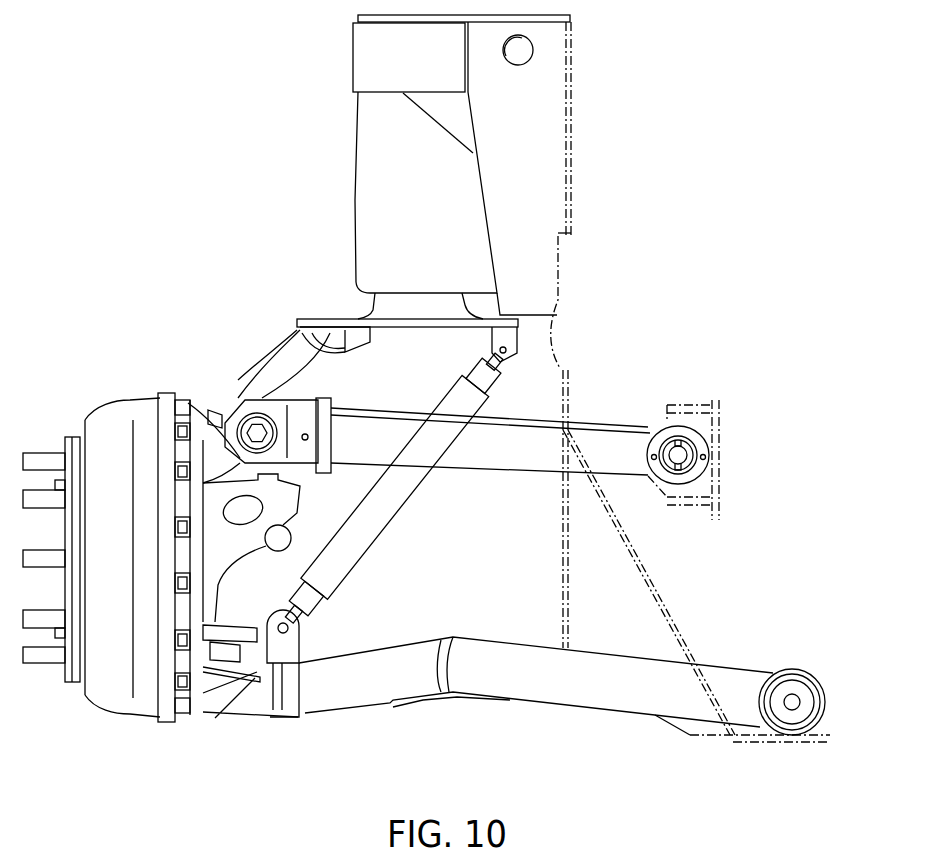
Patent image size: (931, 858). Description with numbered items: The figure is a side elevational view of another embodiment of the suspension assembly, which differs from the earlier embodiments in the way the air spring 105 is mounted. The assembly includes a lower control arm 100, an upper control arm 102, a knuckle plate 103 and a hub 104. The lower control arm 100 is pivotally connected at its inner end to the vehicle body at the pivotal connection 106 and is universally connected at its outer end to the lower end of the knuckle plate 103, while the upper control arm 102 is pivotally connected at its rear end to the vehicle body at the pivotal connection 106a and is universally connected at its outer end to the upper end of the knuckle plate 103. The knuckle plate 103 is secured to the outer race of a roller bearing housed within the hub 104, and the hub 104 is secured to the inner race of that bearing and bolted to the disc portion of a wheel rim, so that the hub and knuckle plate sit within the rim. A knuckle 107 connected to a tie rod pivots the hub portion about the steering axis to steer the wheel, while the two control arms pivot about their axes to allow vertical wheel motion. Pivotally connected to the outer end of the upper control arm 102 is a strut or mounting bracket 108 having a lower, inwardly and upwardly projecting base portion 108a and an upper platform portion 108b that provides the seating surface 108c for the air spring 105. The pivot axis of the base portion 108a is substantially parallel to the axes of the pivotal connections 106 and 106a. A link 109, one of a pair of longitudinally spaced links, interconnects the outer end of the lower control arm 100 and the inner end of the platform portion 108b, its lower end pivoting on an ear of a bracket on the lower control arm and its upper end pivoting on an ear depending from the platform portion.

The lower control arm 100 is at (540, 683).
The upper control arm 102 is at (372, 405).
The knuckle plate 103 is at (205, 413).
The hub 104 is at (100, 412).
The air spring 105 is at (373, 160).
The pivotal connection of lower control arm 106 is at (790, 697).
The pivotal connection of upper control arm 106a is at (704, 455).
The knuckle 107 is at (232, 555).
The strut or mounting bracket 108 is at (232, 371).
The base portion 108a is at (260, 392).
The platform portion 108b is at (322, 318).
The seating surface 108c is at (475, 319).
The link 109 is at (366, 562).